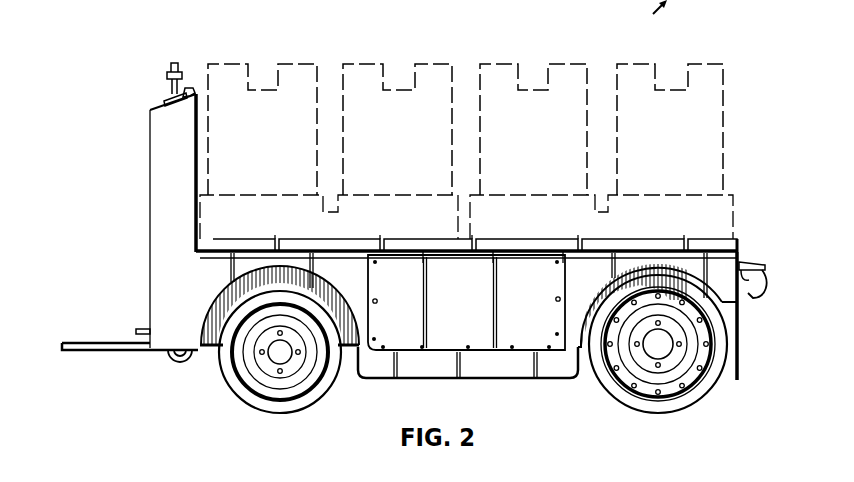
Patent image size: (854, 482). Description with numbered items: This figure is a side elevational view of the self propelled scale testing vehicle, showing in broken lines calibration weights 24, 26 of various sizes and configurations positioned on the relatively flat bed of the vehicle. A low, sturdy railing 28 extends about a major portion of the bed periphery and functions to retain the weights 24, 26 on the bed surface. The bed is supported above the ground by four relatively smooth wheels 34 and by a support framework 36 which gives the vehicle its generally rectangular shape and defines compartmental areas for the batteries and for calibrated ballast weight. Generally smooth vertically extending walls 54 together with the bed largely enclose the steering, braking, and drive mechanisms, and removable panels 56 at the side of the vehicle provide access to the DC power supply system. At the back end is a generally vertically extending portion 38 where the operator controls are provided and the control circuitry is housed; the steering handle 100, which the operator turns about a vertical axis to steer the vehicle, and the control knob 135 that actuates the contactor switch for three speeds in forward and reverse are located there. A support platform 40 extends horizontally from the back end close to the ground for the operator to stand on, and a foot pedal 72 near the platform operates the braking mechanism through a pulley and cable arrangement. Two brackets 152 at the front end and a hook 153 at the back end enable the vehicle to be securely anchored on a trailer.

The calibration weights 24 is at (362, 210).
The calibration weights 26 is at (298, 72).
The railing 28 is at (728, 240).
The wheels 34 is at (230, 378).
The support framework 36 is at (400, 384).
The vertically extending portion 38 is at (144, 134).
The support platform 40 is at (82, 350).
The vertically extending walls 54 is at (513, 365).
The removable panels 56 is at (383, 270).
The foot pedal 72 is at (139, 330).
The handle 100 is at (173, 63).
The control knob 135 is at (192, 88).
The brackets 152 is at (752, 298).
The hook 153 is at (178, 362).